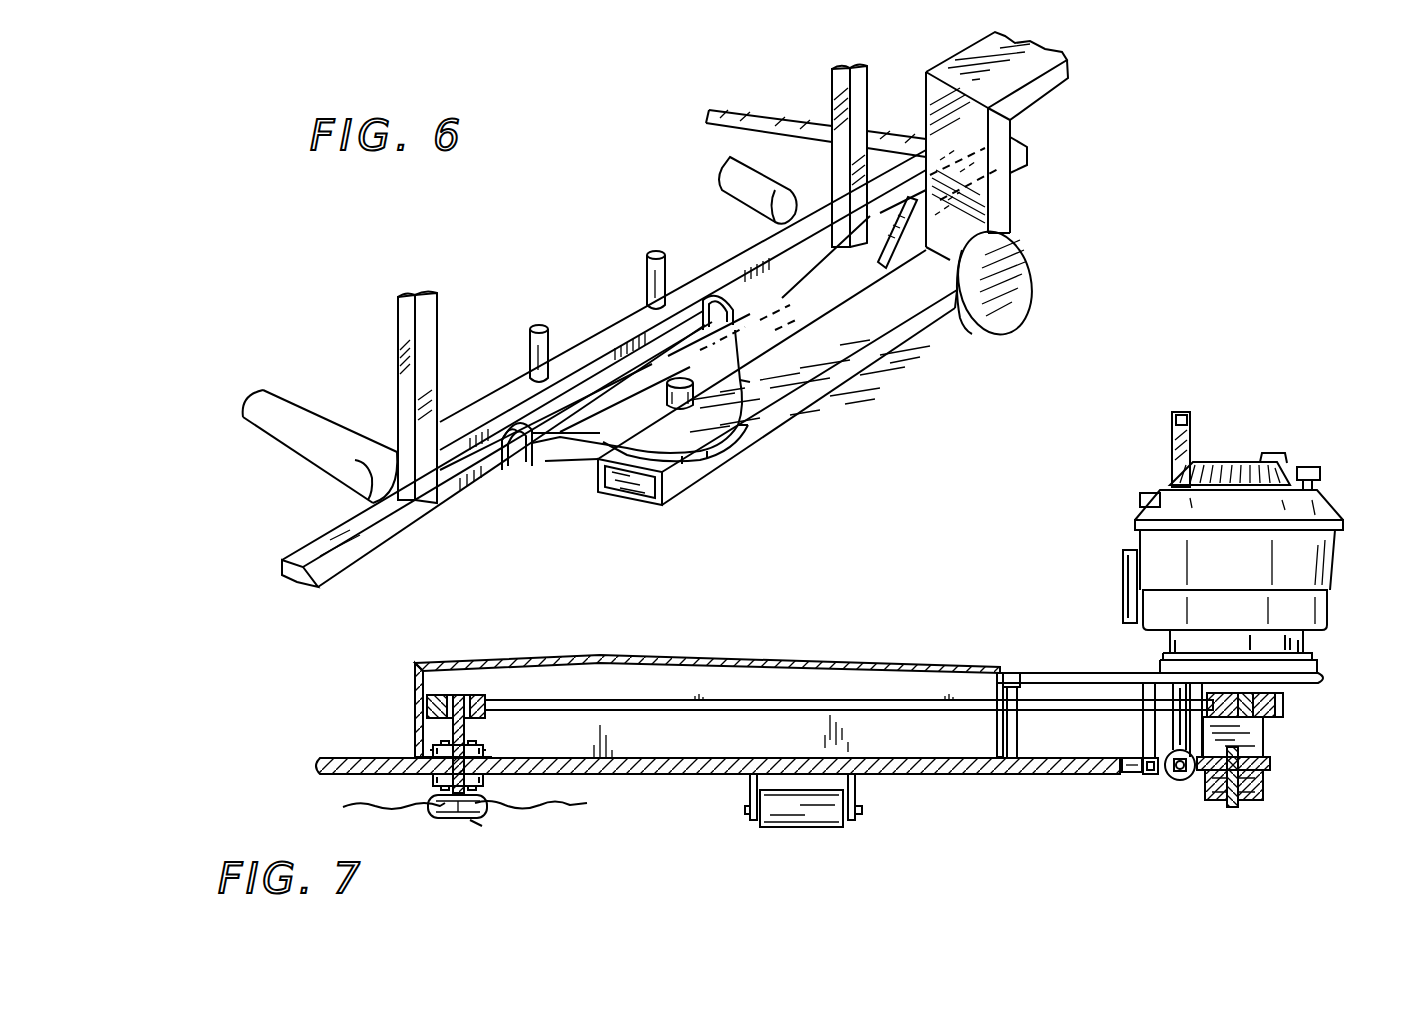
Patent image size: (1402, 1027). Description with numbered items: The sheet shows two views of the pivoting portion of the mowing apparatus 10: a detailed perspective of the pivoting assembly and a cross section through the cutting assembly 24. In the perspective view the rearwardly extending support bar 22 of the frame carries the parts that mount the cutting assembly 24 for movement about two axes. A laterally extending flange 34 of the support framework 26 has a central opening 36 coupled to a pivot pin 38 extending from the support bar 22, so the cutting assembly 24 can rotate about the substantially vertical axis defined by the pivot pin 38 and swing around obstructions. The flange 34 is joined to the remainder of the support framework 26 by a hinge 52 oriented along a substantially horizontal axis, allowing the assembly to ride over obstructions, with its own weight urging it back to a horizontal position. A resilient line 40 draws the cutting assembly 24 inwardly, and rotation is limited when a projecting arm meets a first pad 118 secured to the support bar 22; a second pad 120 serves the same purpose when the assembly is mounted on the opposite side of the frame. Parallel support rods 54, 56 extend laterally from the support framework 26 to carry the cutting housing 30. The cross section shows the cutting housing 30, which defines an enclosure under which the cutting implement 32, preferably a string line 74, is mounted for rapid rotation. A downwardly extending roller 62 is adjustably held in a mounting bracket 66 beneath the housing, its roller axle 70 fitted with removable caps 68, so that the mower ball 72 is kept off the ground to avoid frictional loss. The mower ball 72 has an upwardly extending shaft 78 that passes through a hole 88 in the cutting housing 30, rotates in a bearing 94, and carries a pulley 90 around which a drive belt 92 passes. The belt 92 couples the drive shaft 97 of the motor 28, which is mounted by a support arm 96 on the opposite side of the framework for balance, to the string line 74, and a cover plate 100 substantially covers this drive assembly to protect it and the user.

In FIG. 7, the mowing apparatus 10 is at (1067, 625).
In FIG. 6, the rearwardly extending support bar 22 is at (937, 336).
In FIG. 7, the rearwardly extending support bar 22 is at (1265, 800).
In FIG. 7, the cutting assembly 24 is at (777, 655).
In FIG. 6, the support framework 26 is at (840, 90).
In FIG. 7, the support framework 26 is at (1186, 413).
In FIG. 7, the motor 28 is at (1305, 462).
In FIG. 7, the cutting housing 30 is at (958, 774).
In FIG. 7, the cutting implement 32 is at (476, 828).
In FIG. 6, the laterally extending flange 34 is at (620, 428).
In FIG. 7, the laterally extending flange 34 is at (1200, 782).
In FIG. 6, the central opening 36 is at (737, 445).
In FIG. 7, the central opening 36 is at (1265, 757).
In FIG. 6, the pivot pin 38 is at (695, 393).
In FIG. 7, the pivot pin 38 is at (1262, 787).
In FIG. 6, the resilient line 40 is at (730, 129).
In FIG. 6, the hinge 52 is at (528, 463).
In FIG. 7, the hinge 52 is at (1174, 777).
In FIG. 6, the support rod 54 is at (742, 206).
In FIG. 7, the support rod 54 is at (1138, 772).
In FIG. 6, the support rod 56 is at (330, 458).
In FIG. 7, the roller 62 is at (800, 822).
In FIG. 7, the mounting bracket 66 is at (750, 790).
In FIG. 7, the removable caps 68 is at (748, 812).
In FIG. 7, the roller axle 70 is at (845, 818).
In FIG. 7, the mower ball 72 is at (455, 818).
In FIG. 7, the string line 74 is at (407, 805).
In FIG. 7, the upwardly extending shaft 78 is at (464, 738).
In FIG. 7, the hole 88 is at (455, 745).
In FIG. 7, the pulley 90 is at (465, 697).
In FIG. 7, the drive belt 92 is at (670, 700).
In FIG. 7, the bearing 94 is at (443, 778).
In FIG. 7, the support arm 96 is at (1337, 665).
In FIG. 7, the drive shaft 97 is at (1283, 712).
In FIG. 7, the cover plate 100 is at (877, 661).
In FIG. 6, the first pad 118 is at (894, 205).
In FIG. 6, the second pad 120 is at (1026, 276).